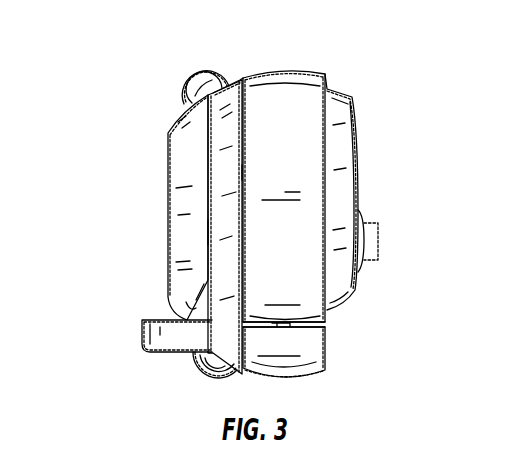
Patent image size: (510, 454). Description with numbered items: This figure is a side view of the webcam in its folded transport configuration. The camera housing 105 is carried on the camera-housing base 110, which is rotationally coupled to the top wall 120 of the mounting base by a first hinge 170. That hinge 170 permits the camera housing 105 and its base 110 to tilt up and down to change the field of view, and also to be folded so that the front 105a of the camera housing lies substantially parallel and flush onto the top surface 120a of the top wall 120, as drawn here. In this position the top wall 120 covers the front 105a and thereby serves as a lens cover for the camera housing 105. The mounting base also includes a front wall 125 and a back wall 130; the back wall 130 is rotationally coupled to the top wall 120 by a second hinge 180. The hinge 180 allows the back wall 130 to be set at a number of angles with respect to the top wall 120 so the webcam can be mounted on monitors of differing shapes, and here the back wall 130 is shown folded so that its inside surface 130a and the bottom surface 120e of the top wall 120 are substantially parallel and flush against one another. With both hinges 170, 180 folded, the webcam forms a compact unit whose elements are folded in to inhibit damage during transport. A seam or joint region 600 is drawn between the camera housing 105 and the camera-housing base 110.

The camera housing 105 is at (327, 80).
The front of the camera housing 105a is at (243, 173).
The camera-housing base 110 is at (327, 360).
The top wall 120 is at (232, 85).
The top surface of the top wall 120a is at (243, 98).
The bottom surface of the top wall 120e is at (210, 232).
The front wall 125 is at (142, 333).
The back wall 130 is at (188, 120).
The inside surface of the back wall 130a is at (210, 278).
The hinge 170 is at (193, 358).
The hinge 180 is at (207, 70).
The seam strip 600 is at (327, 323).